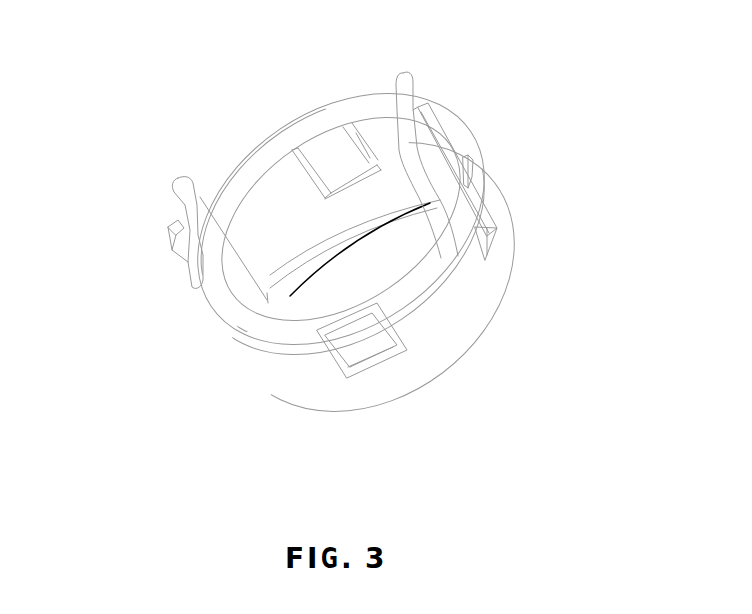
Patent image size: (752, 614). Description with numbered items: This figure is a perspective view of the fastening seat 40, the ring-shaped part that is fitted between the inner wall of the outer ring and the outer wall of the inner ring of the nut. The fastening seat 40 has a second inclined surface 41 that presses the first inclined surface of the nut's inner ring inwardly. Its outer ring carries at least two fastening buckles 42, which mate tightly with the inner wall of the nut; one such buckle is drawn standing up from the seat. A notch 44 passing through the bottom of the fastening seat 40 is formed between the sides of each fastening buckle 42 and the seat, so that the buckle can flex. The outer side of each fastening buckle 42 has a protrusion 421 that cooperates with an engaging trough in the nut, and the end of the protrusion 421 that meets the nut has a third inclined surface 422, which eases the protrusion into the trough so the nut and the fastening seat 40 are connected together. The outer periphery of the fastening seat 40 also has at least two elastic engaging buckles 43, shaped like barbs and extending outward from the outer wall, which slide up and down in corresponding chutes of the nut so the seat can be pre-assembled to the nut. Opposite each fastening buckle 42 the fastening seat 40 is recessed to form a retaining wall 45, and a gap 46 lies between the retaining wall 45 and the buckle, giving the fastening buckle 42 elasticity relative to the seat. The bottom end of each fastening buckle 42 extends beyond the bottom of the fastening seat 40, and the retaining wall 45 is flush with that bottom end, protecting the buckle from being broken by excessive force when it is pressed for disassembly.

The fastening seat 40 is at (356, 263).
The second inclined surface 41 is at (300, 233).
The fastening buckle 42 is at (533, 143).
The protrusion 421 is at (473, 173).
The third inclined surface 422 is at (473, 195).
The engaging buckle 43 is at (370, 357).
The notch 44 is at (493, 230).
The retaining wall 45 is at (412, 125).
The gap 46 is at (180, 238).